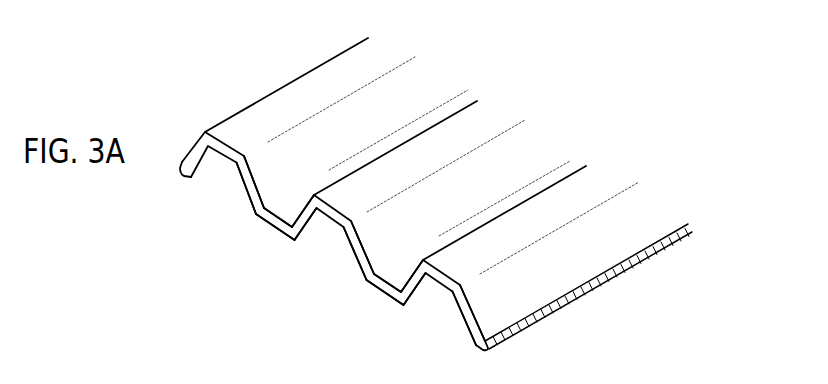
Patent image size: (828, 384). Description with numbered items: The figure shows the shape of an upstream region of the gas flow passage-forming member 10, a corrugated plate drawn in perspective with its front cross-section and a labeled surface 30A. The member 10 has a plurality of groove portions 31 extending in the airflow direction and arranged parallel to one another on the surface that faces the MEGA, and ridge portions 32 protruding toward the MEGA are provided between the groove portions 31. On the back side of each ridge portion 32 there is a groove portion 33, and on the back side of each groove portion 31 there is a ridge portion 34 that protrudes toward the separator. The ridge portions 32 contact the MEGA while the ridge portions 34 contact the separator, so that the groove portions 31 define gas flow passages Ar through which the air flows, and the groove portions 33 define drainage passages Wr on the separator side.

The gas flow passage-forming member 10 is at (198, 118).
The front surface of corrugated plate 30A is at (237, 112).
The groove portion 31 is at (247, 187).
The ridge portion 32 is at (277, 233).
The groove portion 33 is at (377, 103).
The ridge portion 34 is at (450, 135).
The gas flow passage Ar is at (227, 178).
The drainage passage Wr is at (357, 117).